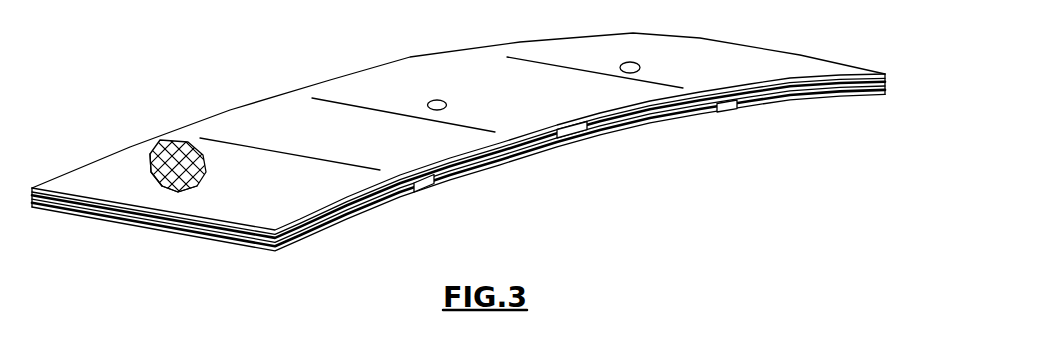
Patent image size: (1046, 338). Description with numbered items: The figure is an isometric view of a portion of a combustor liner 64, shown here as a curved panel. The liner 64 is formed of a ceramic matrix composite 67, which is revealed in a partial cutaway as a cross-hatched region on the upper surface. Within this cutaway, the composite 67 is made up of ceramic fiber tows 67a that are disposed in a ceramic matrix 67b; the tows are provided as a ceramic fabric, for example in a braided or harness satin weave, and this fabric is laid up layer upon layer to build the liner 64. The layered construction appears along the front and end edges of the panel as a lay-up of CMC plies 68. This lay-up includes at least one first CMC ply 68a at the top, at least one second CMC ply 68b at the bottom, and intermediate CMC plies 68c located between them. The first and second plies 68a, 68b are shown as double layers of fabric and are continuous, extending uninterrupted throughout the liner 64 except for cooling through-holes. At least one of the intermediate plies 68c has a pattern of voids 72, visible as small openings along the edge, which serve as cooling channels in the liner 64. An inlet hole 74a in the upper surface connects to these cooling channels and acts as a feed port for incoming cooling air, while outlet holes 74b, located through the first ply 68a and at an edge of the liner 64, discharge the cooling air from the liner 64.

The liner 64 is at (233, 82).
The ceramic matrix composite 67 is at (198, 181).
The ceramic fiber tows 67a is at (153, 174).
The ceramic matrix 67b is at (190, 189).
The CMC plies 68 is at (318, 204).
The first CMC ply 68a is at (740, 72).
The second CMC ply 68b is at (700, 118).
The intermediate CMC plies 68c is at (500, 150).
The pattern of voids 72 is at (430, 195).
The inlet hole 74a is at (428, 100).
The outlet hole 74b is at (633, 63).